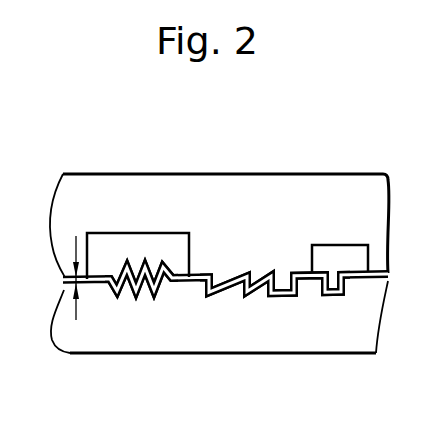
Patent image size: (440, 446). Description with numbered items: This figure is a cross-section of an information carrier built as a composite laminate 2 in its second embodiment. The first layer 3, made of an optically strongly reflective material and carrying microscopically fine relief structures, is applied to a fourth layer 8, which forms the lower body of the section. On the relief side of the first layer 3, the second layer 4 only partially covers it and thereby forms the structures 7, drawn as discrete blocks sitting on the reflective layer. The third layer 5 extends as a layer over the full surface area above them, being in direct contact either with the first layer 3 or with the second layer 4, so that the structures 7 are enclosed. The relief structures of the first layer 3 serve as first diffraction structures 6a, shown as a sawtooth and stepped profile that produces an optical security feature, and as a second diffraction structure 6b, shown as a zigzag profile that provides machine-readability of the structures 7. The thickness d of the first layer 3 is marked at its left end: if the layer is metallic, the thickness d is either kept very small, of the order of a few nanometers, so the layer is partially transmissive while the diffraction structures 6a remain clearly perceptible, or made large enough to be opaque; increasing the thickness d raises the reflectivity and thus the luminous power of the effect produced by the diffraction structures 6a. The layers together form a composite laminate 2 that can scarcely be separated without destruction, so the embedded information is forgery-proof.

The composite laminate 2 is at (41, 173).
The first layer 3 is at (361, 275).
The second layer 4 is at (103, 247).
The third layer 5 is at (301, 201).
The first diffraction structures 6a is at (229, 244).
The second diffraction structure 6b is at (160, 251).
The structures 7 is at (148, 225).
The fourth layer 8 is at (107, 340).
The thickness d is at (64, 292).